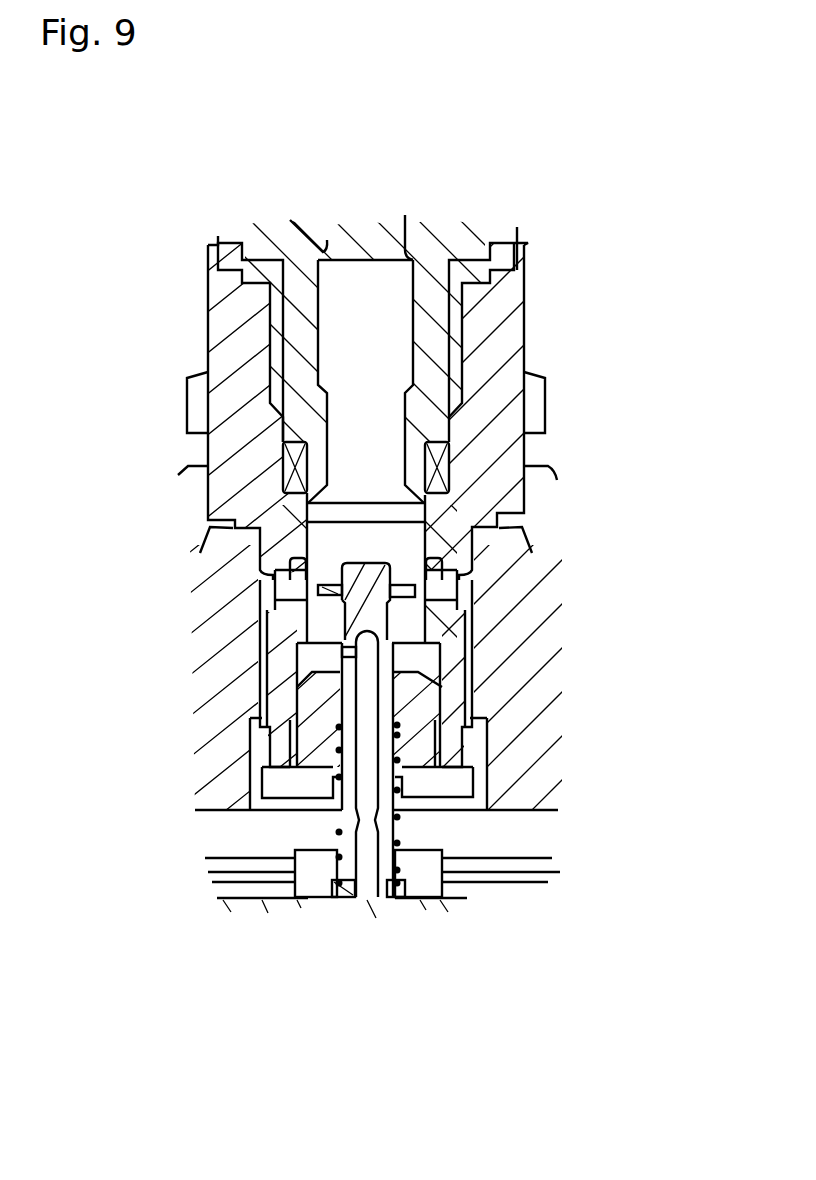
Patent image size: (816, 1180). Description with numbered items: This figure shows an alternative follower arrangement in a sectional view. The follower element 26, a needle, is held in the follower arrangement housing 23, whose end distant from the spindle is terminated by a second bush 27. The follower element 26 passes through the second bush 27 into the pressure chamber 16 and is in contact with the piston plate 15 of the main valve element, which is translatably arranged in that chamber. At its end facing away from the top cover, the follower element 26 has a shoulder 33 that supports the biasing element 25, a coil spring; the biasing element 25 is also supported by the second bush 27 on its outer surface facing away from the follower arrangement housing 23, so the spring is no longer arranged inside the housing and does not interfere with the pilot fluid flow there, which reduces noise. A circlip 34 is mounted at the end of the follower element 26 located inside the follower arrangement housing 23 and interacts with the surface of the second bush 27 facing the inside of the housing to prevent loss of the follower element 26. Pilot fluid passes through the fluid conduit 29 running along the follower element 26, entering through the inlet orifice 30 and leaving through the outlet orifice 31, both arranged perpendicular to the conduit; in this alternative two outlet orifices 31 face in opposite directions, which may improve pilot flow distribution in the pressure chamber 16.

The piston plate 15 is at (418, 907).
The pressure chamber 16 is at (252, 835).
The follower arrangement housing 23 is at (490, 390).
The biasing element 25 is at (407, 842).
The follower element 26 is at (362, 575).
The second bush 27 is at (323, 697).
The fluid conduit 29 is at (352, 898).
The inlet orifice 30 is at (340, 650).
The outlet orifice 31 is at (333, 797).
The shoulder 33 is at (333, 897).
The circlip 34 is at (408, 590).